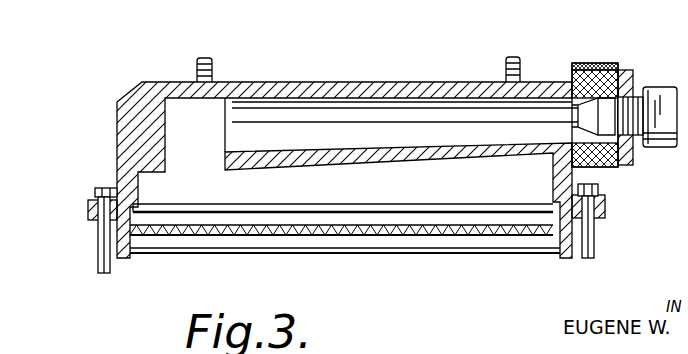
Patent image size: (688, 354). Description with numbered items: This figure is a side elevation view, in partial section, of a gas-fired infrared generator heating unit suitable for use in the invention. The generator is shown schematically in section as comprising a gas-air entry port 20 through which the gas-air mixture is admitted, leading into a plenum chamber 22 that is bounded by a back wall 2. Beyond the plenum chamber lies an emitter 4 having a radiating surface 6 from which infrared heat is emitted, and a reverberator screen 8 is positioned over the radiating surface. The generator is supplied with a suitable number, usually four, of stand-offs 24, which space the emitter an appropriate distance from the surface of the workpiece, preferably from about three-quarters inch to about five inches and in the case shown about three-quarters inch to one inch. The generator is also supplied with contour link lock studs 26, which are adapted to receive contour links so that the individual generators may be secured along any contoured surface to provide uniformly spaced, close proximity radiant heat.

The back wall 2 is at (381, 161).
The emitter 4 is at (453, 225).
The radiating surface 6 is at (431, 237).
The reverberator screen 8 is at (382, 250).
The gas-air entry port 20 is at (651, 148).
The plenum chamber 22 is at (293, 197).
The stand-offs 24 is at (97, 233).
The contour link lock studs 26 is at (213, 72).